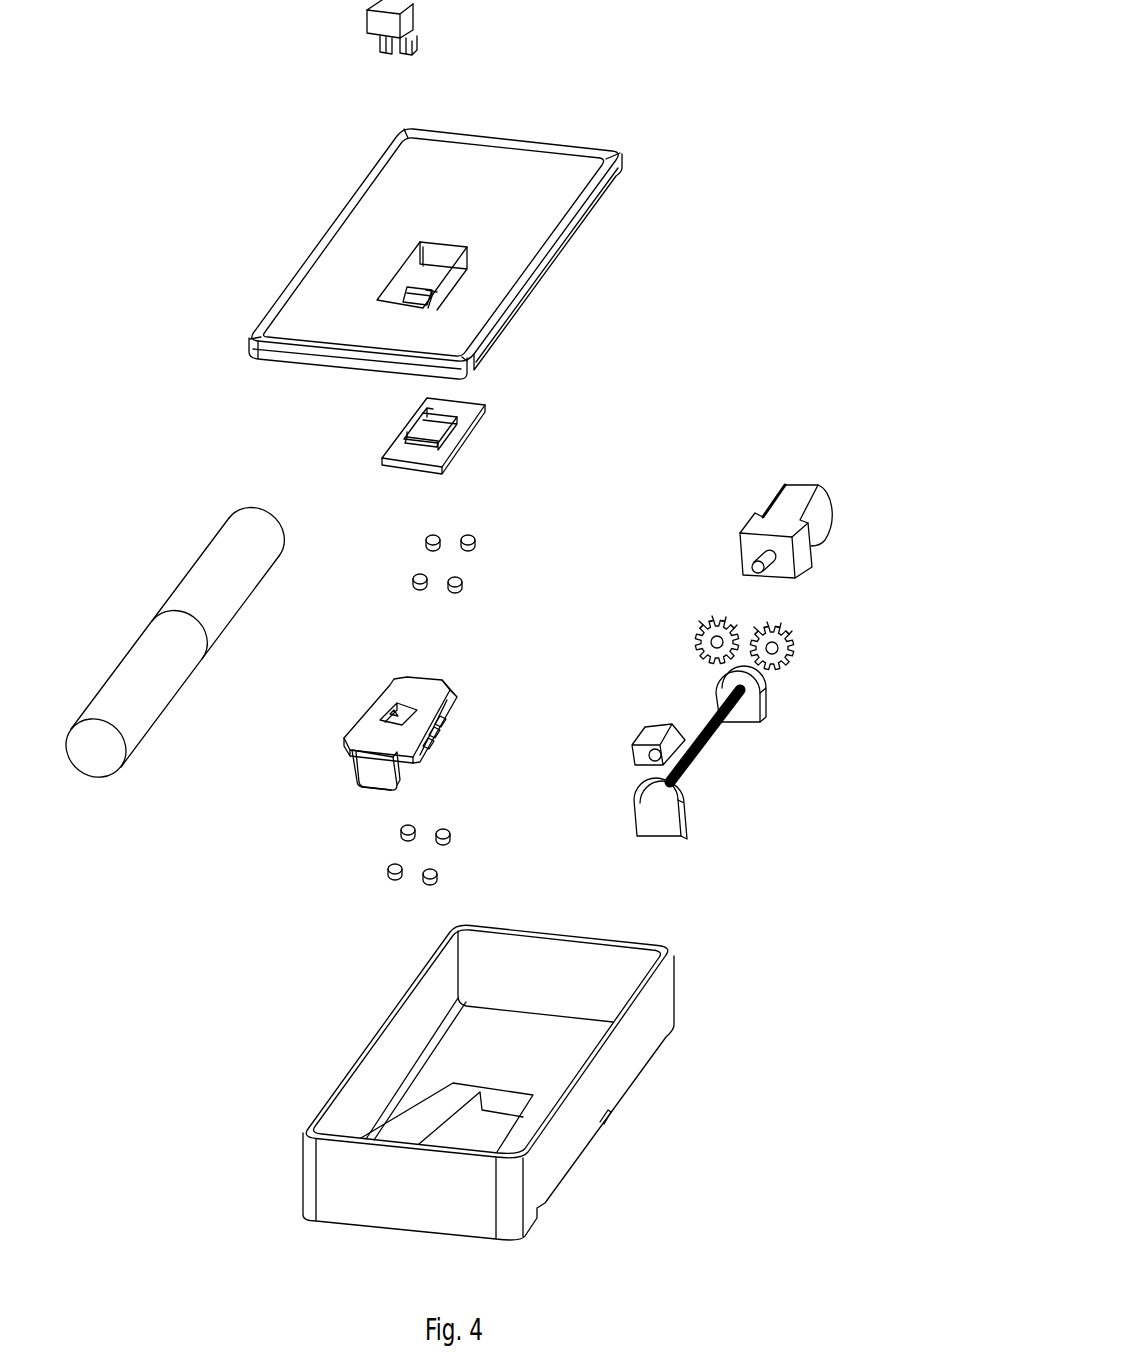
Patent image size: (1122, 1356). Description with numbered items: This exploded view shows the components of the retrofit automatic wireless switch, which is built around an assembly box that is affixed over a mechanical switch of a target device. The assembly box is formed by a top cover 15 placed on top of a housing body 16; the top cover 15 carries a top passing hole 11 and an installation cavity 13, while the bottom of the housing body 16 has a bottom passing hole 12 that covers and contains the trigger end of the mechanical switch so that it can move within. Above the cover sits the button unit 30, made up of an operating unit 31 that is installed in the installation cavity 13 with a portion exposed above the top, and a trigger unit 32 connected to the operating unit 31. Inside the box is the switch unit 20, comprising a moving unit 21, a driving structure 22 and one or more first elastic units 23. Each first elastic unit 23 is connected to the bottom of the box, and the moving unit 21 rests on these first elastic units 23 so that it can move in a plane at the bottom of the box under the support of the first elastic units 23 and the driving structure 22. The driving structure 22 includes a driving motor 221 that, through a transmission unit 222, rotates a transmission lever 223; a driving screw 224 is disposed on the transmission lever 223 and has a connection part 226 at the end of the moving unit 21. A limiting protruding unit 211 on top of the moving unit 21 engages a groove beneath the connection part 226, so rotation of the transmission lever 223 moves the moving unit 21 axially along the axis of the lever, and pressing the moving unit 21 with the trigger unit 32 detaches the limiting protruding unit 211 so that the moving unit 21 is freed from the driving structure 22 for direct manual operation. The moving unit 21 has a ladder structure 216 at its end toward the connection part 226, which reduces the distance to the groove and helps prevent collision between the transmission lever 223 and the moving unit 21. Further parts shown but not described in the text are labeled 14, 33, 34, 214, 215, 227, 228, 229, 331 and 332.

The top passing hole 11 is at (410, 302).
The bottom passing hole 12 is at (472, 1125).
The installation cavity 13 is at (408, 263).
The side wall 14 is at (597, 1148).
The top cover 15 is at (575, 150).
The housing body 16 is at (663, 1035).
The switch unit 20 is at (262, 767).
The moving unit 21 is at (388, 688).
The driving structure 22 is at (765, 410).
The first elastic unit 23 is at (400, 833).
The button unit 30 is at (275, 25).
The operating unit 31 is at (367, 11).
The trigger unit 32 is at (380, 48).
The mounting plate 33 is at (443, 455).
The fastening pins 34 is at (425, 543).
The limiting protruding unit 211 is at (438, 724).
The opening 214 is at (375, 716).
The tab 215 is at (355, 785).
The ladder structure 216 is at (452, 697).
The driving motor 221 is at (780, 500).
The transmission unit 222 is at (842, 667).
The transmission lever 223 is at (725, 732).
The driving screw 224 is at (667, 723).
The connection part 226 is at (632, 750).
The drive gear 227 is at (714, 620).
The driven gear 228 is at (793, 643).
The bearing seats 229 is at (757, 703).
The plate opening 331 is at (442, 432).
The flanges 332 is at (427, 417).